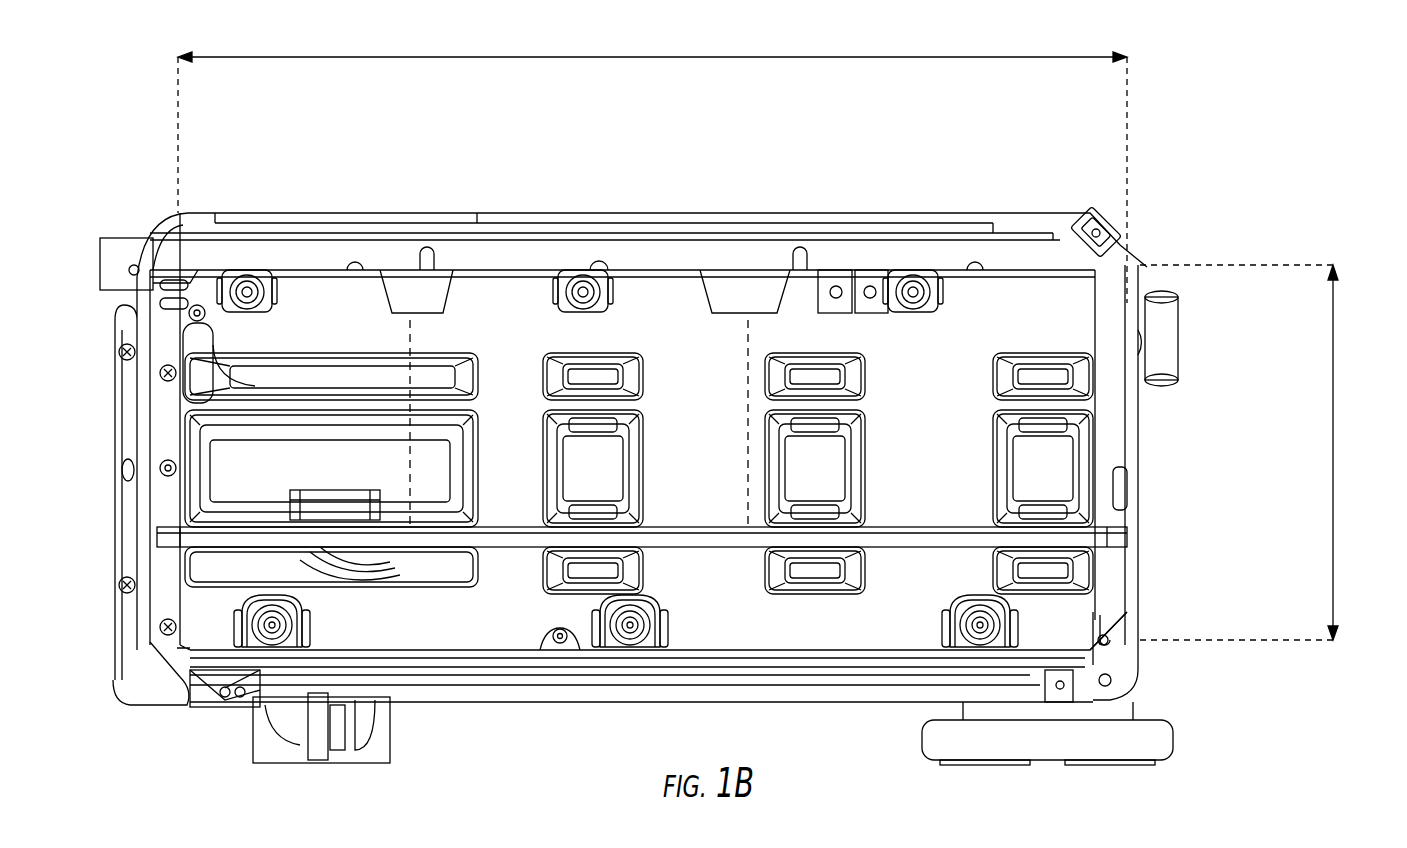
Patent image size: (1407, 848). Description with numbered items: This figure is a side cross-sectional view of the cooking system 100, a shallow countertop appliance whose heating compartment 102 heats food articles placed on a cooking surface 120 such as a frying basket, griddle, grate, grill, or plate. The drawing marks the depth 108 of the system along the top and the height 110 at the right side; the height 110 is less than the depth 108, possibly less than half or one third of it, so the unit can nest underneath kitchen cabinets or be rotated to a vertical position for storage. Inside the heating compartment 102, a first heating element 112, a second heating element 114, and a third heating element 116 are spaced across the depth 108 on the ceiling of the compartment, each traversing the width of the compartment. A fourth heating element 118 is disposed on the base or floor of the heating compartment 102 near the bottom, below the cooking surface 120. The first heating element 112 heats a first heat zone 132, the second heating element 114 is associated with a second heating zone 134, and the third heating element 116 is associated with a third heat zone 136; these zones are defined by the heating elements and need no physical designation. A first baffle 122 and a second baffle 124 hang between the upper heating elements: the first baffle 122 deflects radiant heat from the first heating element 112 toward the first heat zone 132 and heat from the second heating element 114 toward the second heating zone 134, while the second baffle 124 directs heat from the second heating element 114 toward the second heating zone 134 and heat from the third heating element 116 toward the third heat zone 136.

The cooking system 100 is at (1150, 90).
The heating compartment 102 is at (1112, 265).
The depth 108 is at (840, 57).
The height 110 is at (1336, 390).
The first heating element 112 is at (956, 318).
The second heating element 114 is at (622, 318).
The third heating element 116 is at (290, 320).
The fourth heating element 118 is at (340, 626).
The cooking surface 120 is at (510, 533).
The first baffle 122 is at (760, 292).
The second baffle 124 is at (420, 292).
The first heat zone 132 is at (946, 431).
The second heating zone 134 is at (611, 431).
The third heat zone 136 is at (361, 431).